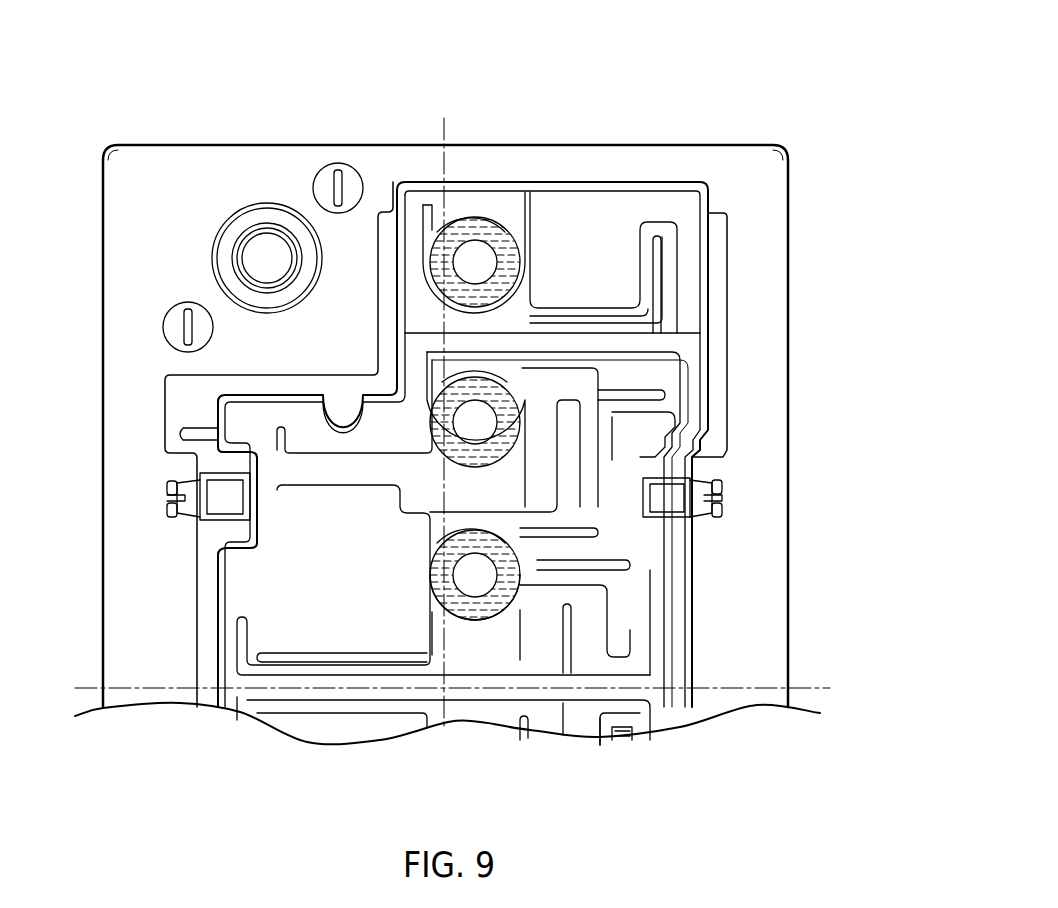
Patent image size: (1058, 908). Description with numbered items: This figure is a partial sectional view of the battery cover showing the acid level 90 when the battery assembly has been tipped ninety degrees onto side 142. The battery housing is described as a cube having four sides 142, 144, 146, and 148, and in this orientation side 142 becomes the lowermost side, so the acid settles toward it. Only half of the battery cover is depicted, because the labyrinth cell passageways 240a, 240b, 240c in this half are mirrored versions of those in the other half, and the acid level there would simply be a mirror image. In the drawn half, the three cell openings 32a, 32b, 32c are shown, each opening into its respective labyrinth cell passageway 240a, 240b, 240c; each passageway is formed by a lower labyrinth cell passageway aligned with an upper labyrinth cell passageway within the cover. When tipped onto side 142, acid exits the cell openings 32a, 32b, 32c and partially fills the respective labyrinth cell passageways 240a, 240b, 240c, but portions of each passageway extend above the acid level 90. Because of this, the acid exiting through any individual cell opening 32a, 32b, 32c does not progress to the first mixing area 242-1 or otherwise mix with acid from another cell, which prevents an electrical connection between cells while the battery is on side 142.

The side 146 is at (268, 146).
The side 144 is at (102, 365).
The side 148 is at (790, 390).
The side 142 is at (585, 740).
The acid level 90 is at (505, 212).
The labyrinth cell passageway 240a is at (517, 242).
The labyrinth cell passageway 240b is at (510, 412).
The labyrinth cell passageway 240c is at (513, 453).
The cell opening 32a is at (512, 262).
The cell opening 32b is at (508, 577).
The cell opening 32c is at (475, 617).
The first mixing area 242-1 is at (352, 593).